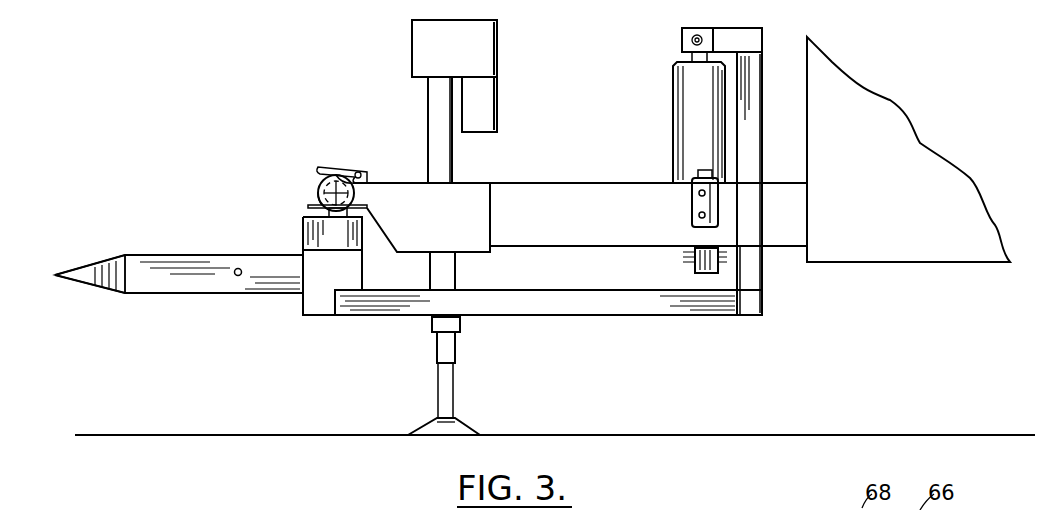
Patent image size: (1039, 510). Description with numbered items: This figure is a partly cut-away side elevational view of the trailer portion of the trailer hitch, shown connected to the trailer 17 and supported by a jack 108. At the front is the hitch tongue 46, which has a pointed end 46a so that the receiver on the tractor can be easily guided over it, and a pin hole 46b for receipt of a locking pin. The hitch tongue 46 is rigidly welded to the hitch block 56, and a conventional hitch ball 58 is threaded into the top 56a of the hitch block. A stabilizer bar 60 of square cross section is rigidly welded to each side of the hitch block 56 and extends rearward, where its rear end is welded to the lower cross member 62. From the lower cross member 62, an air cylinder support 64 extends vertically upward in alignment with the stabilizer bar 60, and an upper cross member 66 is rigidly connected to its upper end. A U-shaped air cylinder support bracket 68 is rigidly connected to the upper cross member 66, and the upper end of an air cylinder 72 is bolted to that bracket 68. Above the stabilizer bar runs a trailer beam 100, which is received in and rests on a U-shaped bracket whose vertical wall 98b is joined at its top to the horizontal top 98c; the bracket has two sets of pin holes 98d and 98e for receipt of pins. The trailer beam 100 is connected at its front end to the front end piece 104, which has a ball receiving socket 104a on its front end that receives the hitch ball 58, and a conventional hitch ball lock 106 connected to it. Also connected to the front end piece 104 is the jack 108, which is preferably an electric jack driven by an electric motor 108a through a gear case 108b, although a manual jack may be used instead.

The trailer 17 is at (912, 274).
The hitch tongue 46 is at (193, 264).
The pointed end 46a is at (85, 275).
The pin hole 46b is at (238, 268).
The hitch block 56 is at (311, 318).
The top of hitch block 56a is at (302, 216).
The hitch ball 58 is at (340, 193).
The stabilizer bar 60 is at (580, 300).
The lower cross member 62 is at (752, 305).
The air cylinder support 64 is at (752, 147).
The upper cross member 66 is at (745, 28).
The air cylinder support bracket 68 is at (688, 28).
The air cylinder 72 is at (680, 91).
The vertical wall 98b is at (719, 200).
The horizontal top 98c is at (705, 180).
The pin holes 98d is at (698, 194).
The pin holes 98e is at (698, 216).
The trailer beam 100 is at (560, 185).
The front end piece 104 is at (385, 180).
The ball receiving socket 104a is at (316, 185).
The hitch ball lock 106 is at (338, 166).
The jack 108 is at (470, 175).
The electric motor 108a is at (485, 113).
The gear case 108b is at (484, 54).